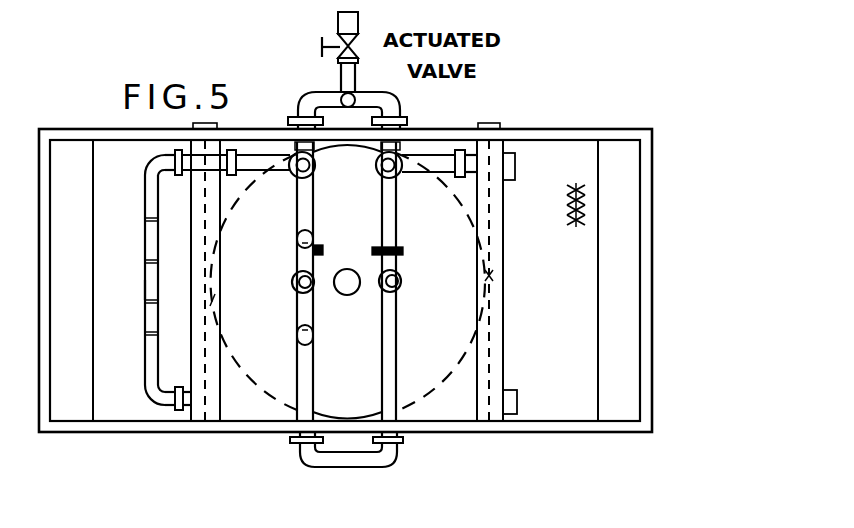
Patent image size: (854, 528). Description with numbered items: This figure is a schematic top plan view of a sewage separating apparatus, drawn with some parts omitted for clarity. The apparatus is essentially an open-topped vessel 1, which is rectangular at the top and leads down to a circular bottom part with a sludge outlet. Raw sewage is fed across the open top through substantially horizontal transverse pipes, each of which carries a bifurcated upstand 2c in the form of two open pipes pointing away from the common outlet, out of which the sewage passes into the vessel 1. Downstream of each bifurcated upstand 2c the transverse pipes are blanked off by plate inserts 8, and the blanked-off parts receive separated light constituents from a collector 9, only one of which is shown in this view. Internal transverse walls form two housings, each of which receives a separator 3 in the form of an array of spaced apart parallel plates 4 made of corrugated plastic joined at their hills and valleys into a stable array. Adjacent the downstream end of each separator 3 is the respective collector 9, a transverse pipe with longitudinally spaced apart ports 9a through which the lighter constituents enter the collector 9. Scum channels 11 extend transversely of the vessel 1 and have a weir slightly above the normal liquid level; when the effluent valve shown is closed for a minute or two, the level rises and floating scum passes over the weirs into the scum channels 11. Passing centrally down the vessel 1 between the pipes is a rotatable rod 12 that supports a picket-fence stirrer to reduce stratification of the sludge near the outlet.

The vessel 1 is at (666, 146).
The separator 3 is at (131, 242).
The parallel plates 4 is at (586, 206).
The plate inserts 8 is at (297, 252).
The collector 9 is at (148, 345).
The ports 9a is at (148, 300).
The scum channels 11 is at (240, 378).
The rotatable rod 12 is at (347, 296).
The bifurcated upstand 2c is at (295, 290).